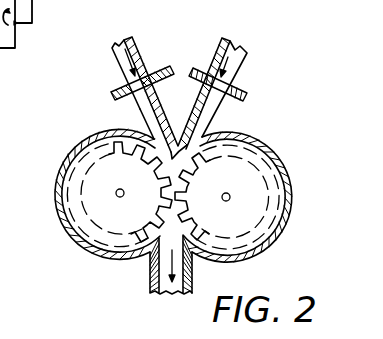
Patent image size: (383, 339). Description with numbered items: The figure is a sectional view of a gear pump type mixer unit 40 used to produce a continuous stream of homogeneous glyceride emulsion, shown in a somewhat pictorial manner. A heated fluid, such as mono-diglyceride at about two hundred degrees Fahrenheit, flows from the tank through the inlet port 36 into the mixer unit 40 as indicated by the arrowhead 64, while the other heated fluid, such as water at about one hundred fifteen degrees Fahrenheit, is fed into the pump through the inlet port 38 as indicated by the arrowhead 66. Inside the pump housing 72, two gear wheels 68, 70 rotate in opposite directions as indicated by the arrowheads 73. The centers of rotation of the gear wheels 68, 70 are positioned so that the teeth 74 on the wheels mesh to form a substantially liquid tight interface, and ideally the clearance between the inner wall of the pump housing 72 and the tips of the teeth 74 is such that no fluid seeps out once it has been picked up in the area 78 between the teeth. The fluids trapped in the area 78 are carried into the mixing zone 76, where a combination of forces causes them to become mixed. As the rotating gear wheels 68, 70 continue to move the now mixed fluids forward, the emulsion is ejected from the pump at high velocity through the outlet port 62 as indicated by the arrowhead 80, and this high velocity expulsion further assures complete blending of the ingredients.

The inlet port 36 is at (138, 115).
The inlet port 38 is at (219, 115).
The mixer unit 40 is at (180, 100).
The outlet port 62 is at (156, 292).
The arrowhead 64 is at (128, 57).
The arrowhead 66 is at (237, 64).
The gear wheel 68 is at (101, 225).
The gear wheel 70 is at (214, 236).
The pump housing 72 is at (55, 203).
The arrowheads 73 is at (172, 192).
The teeth 74 is at (147, 174).
The mixing zone 76 is at (192, 254).
The area between the teeth 78 is at (127, 128).
The arrowhead 80 is at (151, 270).